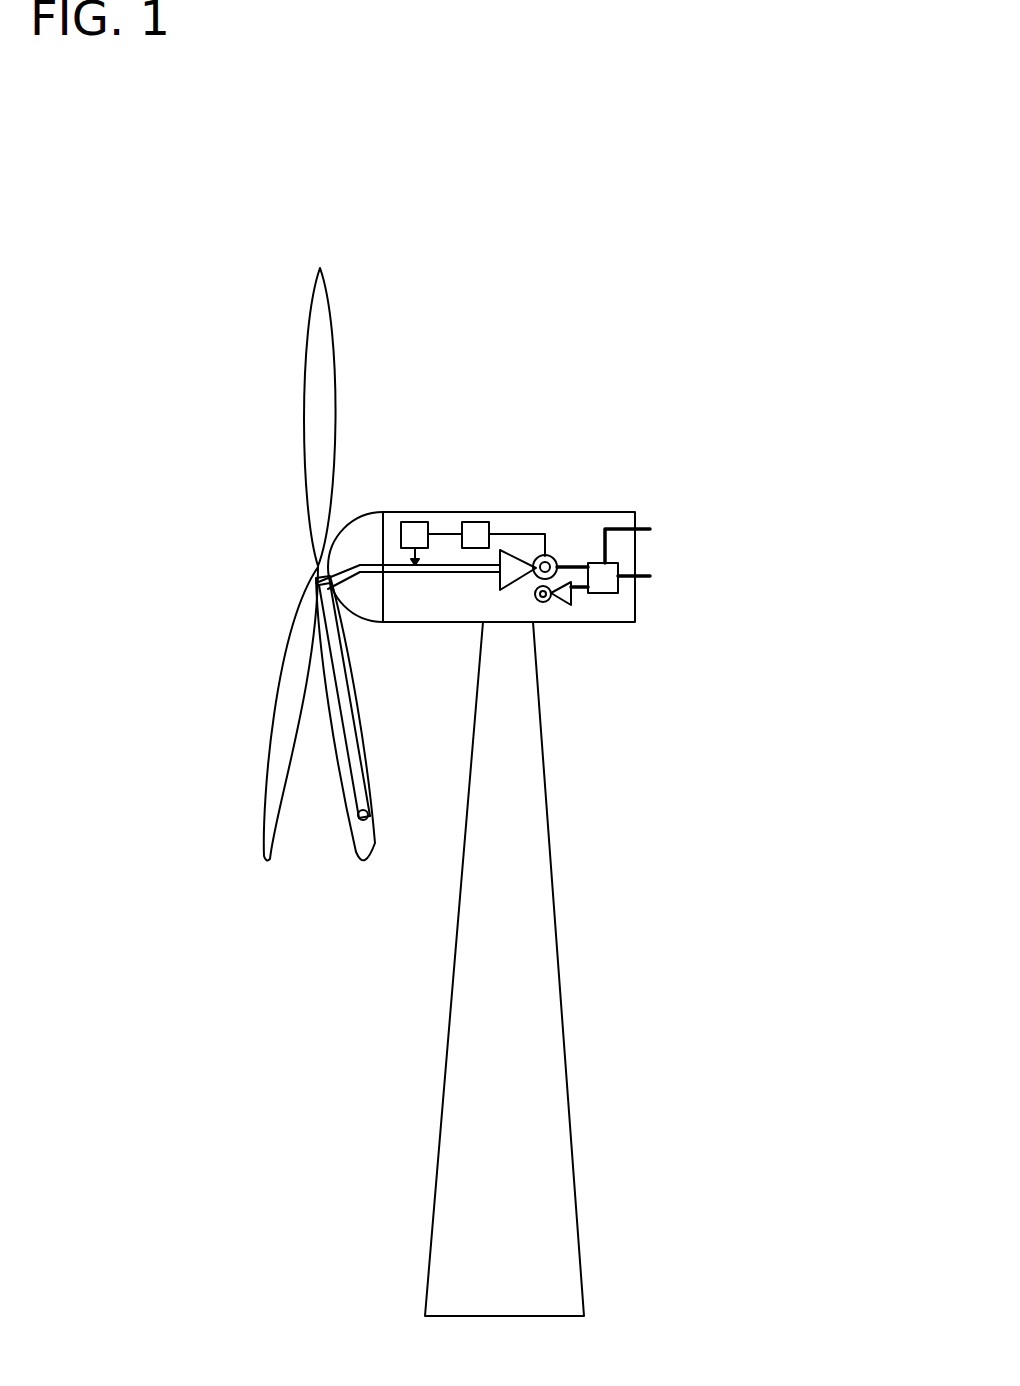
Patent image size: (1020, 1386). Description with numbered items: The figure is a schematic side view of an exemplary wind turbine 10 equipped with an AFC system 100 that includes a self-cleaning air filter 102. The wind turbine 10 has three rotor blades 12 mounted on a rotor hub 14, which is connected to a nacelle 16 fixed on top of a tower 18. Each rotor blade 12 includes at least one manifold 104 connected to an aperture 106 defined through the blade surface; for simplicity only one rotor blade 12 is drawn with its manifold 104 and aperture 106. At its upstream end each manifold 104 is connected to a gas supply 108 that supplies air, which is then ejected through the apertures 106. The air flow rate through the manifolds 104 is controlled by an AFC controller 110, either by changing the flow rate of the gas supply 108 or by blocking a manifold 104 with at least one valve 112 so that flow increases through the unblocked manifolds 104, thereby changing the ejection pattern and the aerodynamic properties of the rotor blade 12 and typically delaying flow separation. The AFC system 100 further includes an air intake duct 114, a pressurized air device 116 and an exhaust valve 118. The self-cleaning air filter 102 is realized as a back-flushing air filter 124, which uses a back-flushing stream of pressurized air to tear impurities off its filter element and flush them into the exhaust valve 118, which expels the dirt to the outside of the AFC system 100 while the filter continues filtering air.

The wind turbine 10 is at (745, 168).
The rotor blade 12 is at (304, 449).
The rotor hub 14 is at (357, 511).
The nacelle 16 is at (633, 512).
The tower 18 is at (558, 936).
The AFC system 100 is at (642, 212).
The self-cleaning air filter 102 is at (602, 598).
The manifold 104 is at (350, 778).
The aperture 106 is at (364, 827).
The gas supply 108 is at (554, 556).
The AFC controller 110 is at (480, 521).
The valve 112 is at (414, 521).
The air intake duct 114 is at (649, 577).
The pressurized air device 116 is at (566, 605).
The exhaust valve 118 is at (648, 528).
The back-flushing air filter 124 is at (607, 594).